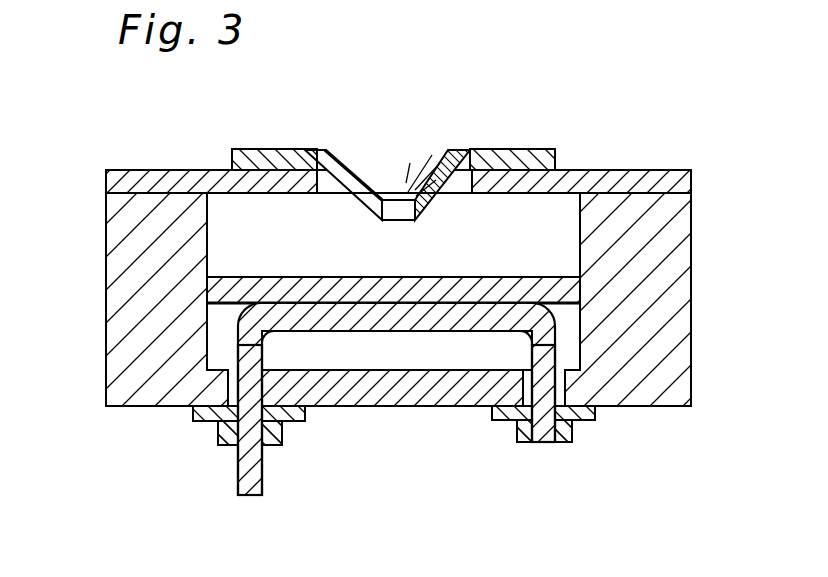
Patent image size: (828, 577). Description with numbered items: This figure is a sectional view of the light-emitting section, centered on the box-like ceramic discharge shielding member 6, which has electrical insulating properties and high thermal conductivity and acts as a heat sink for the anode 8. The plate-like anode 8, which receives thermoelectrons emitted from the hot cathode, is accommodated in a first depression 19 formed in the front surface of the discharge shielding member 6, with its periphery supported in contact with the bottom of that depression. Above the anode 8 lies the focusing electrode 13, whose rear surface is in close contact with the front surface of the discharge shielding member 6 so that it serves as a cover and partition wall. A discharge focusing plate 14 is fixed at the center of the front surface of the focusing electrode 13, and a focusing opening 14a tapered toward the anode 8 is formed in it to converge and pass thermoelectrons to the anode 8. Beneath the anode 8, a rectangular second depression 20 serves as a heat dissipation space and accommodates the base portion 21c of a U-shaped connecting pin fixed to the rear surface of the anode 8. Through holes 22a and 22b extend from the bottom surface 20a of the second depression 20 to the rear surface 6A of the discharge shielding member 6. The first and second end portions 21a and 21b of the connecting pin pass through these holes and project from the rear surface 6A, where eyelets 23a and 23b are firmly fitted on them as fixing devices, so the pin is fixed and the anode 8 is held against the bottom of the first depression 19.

The discharge shielding member 6 is at (128, 300).
The rear surface 6A is at (140, 408).
The anode 8 is at (358, 288).
The focusing electrode 13 is at (150, 183).
The discharge focusing plate 14 is at (280, 160).
The focusing opening 14a is at (397, 208).
The first depression 19 is at (540, 223).
The second depression 20 is at (393, 350).
The bottom surface of the second depression 20a is at (455, 360).
The first end portion 21a is at (542, 432).
The second end portion 21b is at (253, 477).
The base portion 21c is at (345, 315).
The through hole 22a is at (503, 422).
The through hole 22b is at (185, 408).
The eyelet 23a is at (570, 430).
The eyelet 23b is at (225, 440).